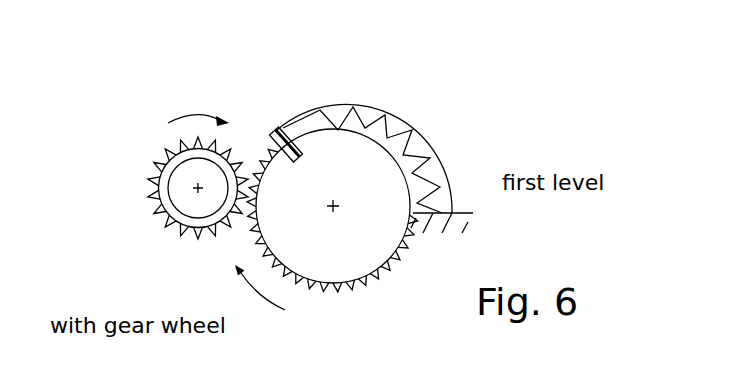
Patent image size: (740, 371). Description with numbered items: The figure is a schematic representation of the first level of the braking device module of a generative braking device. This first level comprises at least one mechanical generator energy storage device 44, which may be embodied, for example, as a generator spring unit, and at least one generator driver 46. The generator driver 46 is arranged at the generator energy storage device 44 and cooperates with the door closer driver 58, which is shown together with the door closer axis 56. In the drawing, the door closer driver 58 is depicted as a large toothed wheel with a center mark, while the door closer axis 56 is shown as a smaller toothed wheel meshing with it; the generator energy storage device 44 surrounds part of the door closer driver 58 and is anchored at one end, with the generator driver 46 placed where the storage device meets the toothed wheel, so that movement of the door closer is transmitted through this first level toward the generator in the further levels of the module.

The mechanical generator energy storage device 44 is at (398, 118).
The generator driver 46 is at (277, 130).
The door closer axis 56 is at (158, 212).
The door closer driver 58 is at (315, 211).